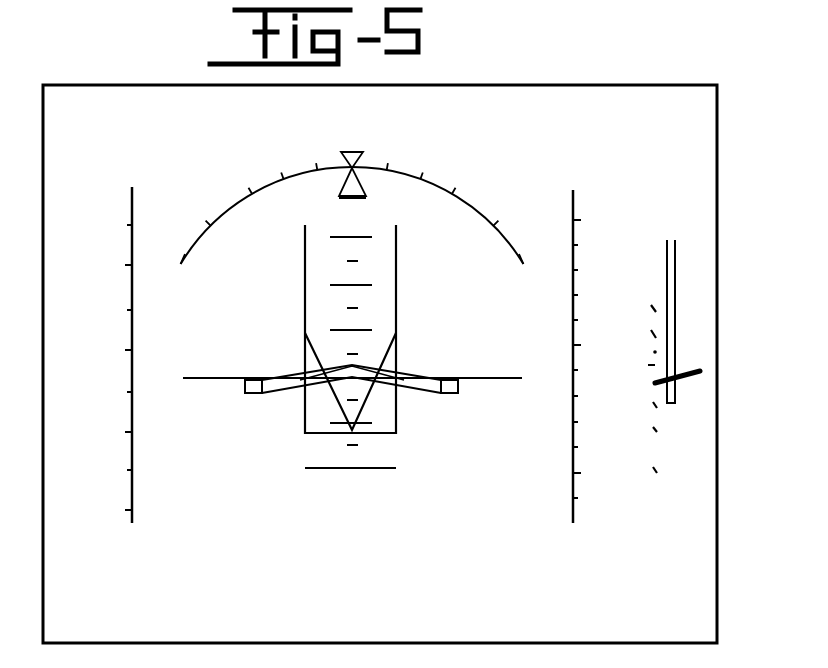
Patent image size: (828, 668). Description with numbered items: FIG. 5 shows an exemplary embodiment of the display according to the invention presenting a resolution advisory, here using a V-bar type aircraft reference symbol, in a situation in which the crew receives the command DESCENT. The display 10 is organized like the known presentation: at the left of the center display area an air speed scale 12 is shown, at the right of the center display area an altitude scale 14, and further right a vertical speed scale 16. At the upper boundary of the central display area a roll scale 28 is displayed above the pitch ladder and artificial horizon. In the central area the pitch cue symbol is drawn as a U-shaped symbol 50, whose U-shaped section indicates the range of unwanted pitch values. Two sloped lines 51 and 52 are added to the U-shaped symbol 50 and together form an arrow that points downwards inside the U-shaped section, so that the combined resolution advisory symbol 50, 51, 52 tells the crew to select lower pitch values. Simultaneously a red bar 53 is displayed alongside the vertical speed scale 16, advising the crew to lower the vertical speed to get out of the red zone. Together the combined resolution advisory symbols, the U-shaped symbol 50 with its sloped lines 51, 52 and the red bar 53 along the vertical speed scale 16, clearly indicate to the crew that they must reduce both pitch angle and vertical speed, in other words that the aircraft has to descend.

The head-up display 10 is at (656, 103).
The air speed scale 12 is at (132, 199).
The altitude scale 14 is at (573, 201).
The vertical speed scale 16 is at (653, 269).
The roll scale 28 is at (422, 172).
The U-shaped symbol 50 is at (305, 243).
The sloped line 51 is at (354, 389).
The sloped line 52 is at (362, 392).
The red bar 53 is at (672, 336).